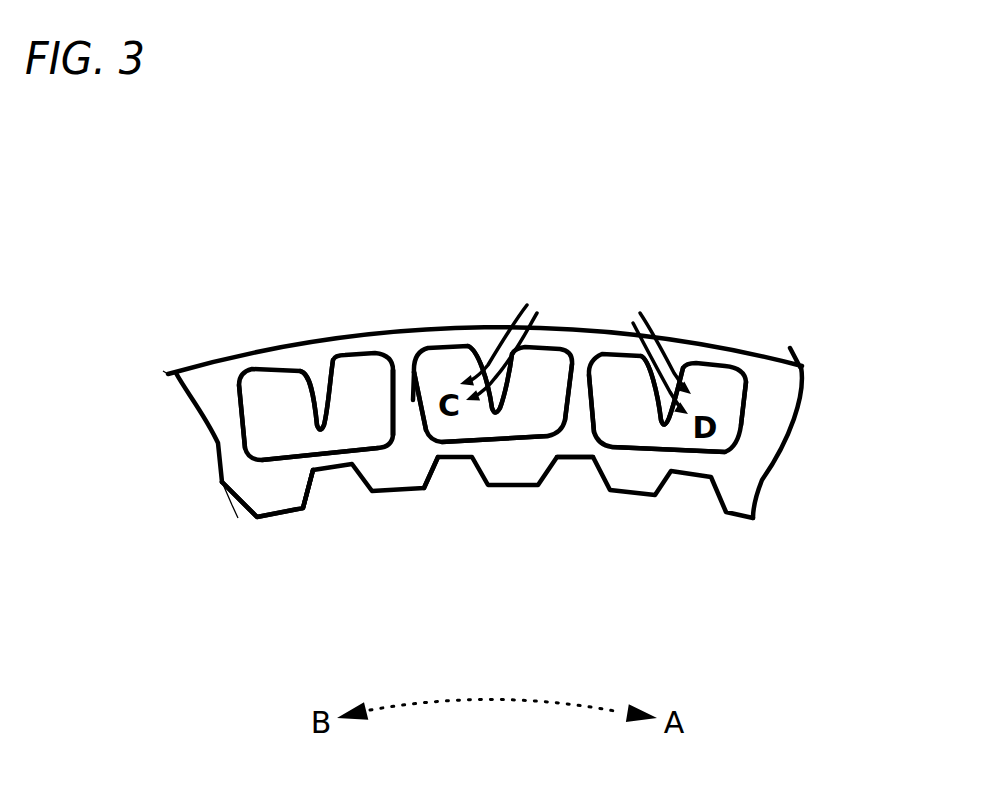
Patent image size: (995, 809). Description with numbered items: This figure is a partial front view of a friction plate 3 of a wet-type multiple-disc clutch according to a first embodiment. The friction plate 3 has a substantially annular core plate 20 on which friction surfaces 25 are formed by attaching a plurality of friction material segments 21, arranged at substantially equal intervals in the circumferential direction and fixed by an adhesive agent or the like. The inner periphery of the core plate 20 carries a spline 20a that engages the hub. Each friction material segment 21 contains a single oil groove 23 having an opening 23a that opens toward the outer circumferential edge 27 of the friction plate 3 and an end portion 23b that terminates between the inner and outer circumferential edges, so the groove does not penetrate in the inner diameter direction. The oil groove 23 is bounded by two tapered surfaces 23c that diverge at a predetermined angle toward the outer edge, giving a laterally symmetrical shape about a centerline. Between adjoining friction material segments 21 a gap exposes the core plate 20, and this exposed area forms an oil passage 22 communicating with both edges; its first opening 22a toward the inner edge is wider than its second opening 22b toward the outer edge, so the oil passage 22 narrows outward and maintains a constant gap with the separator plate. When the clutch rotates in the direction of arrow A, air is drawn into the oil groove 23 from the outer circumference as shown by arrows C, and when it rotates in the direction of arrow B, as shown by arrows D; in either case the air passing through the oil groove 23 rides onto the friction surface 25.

The friction plate 3 is at (715, 250).
The core plate 20 is at (386, 342).
The spline 20a is at (330, 482).
The friction material segments 21 is at (270, 440).
The oil passage 22 is at (578, 425).
The first opening 22a is at (408, 430).
The second opening 22b is at (403, 365).
The oil groove 23 is at (278, 372).
The opening 23a is at (314, 400).
The end portion 23b is at (316, 482).
The tapered surfaces 23c is at (316, 416).
The friction surfaces 25 is at (296, 455).
The outer circumferential edge 27 is at (613, 360).